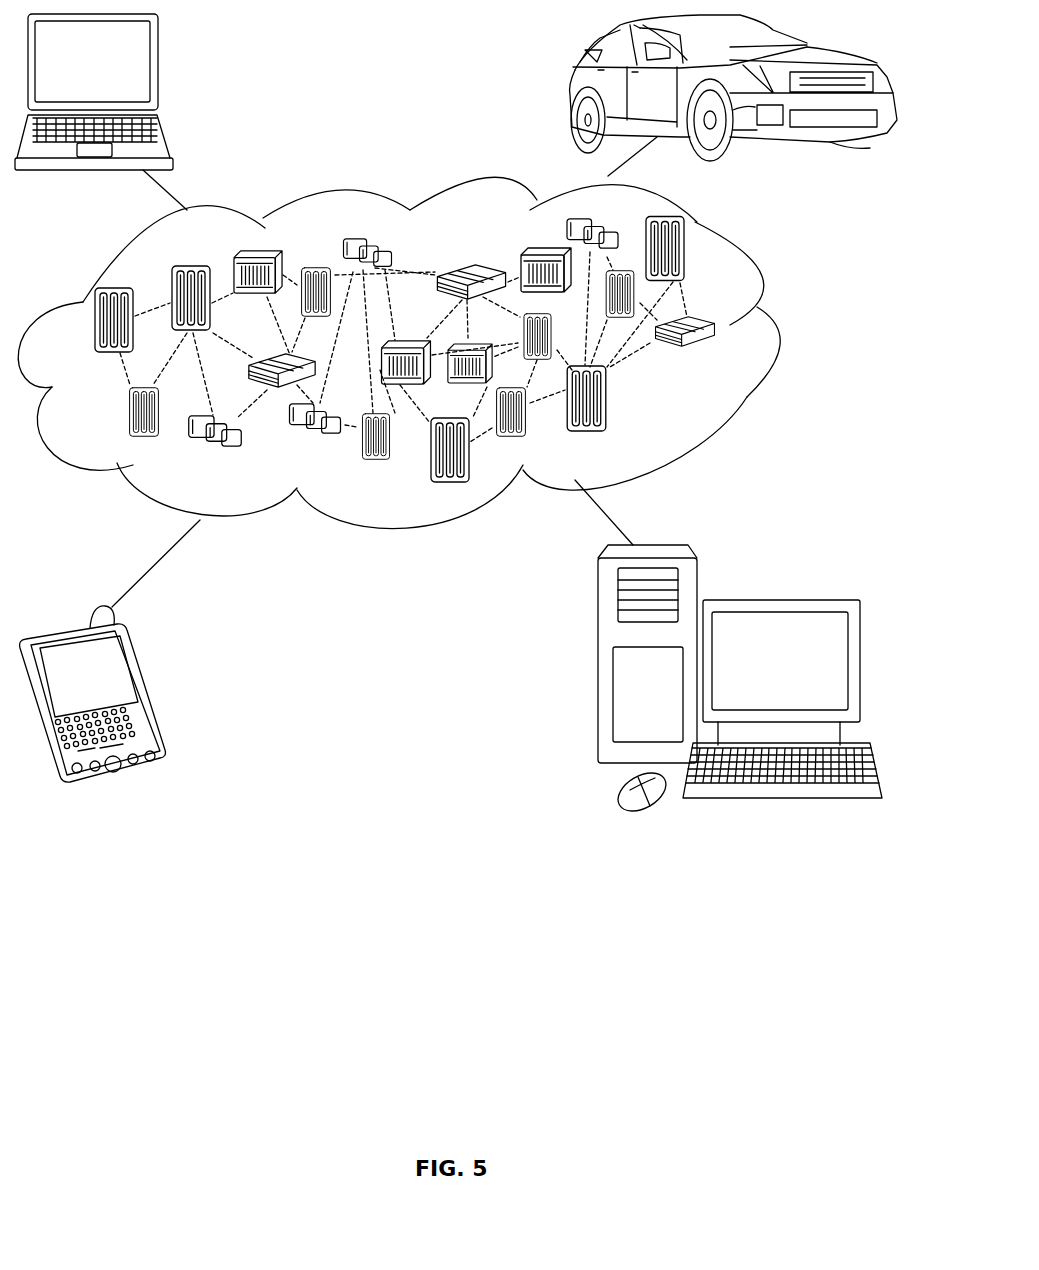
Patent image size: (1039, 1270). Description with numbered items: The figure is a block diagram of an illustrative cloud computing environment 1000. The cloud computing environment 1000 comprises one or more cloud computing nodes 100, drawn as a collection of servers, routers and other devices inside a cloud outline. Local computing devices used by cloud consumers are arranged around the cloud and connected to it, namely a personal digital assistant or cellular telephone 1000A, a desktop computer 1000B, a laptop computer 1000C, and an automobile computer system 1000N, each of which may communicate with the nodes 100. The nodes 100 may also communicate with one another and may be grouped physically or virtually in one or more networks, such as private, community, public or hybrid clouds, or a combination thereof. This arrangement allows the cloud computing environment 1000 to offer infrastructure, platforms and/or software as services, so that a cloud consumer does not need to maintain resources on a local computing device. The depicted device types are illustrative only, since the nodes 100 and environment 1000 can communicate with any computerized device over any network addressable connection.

The cloud computing nodes 100 is at (727, 359).
The cloud computing environment 1000 is at (778, 330).
The personal digital assistant (PDA) or cellular telephone 1000A is at (150, 692).
The desktop computer 1000B is at (788, 580).
The laptop computer 1000C is at (162, 71).
The automobile computer system 1000N is at (570, 88).